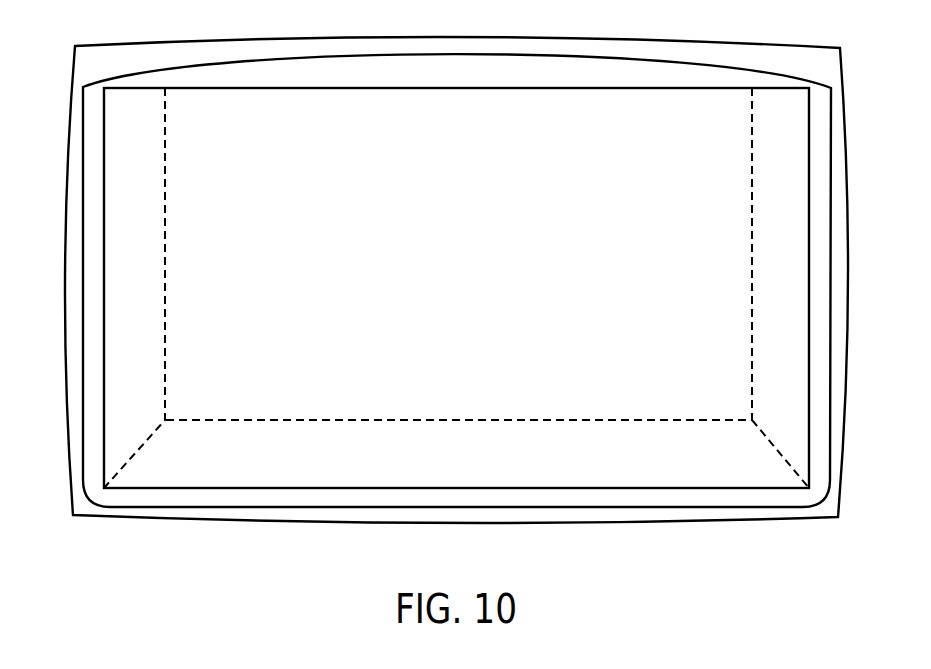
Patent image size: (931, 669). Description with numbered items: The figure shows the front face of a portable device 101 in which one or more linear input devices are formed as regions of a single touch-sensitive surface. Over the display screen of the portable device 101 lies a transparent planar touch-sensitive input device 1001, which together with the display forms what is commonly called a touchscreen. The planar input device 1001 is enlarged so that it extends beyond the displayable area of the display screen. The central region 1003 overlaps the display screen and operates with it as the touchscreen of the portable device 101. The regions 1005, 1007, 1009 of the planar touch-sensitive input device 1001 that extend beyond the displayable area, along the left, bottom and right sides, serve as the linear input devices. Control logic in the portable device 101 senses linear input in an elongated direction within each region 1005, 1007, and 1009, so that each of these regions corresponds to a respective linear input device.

The portable device 101 is at (633, 68).
The planar touch-sensitive input device 1001 is at (637, 490).
The region 1003 is at (730, 160).
The region 1005 is at (130, 262).
The region 1007 is at (448, 475).
The region 1009 is at (795, 292).